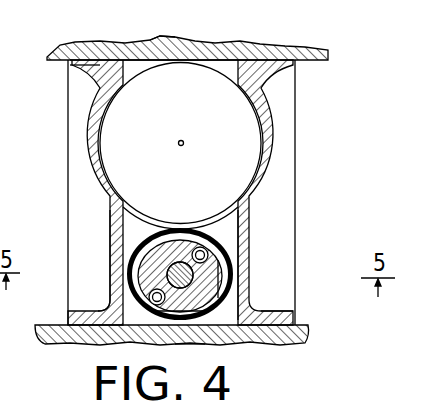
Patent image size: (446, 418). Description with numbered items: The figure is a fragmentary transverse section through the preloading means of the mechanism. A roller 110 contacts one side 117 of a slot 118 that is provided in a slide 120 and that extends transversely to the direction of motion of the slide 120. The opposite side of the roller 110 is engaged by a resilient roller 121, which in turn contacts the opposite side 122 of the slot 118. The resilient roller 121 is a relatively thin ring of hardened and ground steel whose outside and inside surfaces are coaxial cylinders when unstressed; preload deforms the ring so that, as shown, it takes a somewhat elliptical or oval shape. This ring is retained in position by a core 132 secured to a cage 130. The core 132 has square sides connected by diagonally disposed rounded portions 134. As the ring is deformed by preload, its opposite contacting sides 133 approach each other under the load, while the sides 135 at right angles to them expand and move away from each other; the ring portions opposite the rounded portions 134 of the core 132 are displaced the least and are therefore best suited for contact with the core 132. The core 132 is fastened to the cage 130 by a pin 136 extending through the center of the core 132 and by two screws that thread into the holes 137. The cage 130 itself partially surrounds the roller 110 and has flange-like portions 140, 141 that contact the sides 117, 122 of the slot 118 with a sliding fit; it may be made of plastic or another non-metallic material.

The roller 110 is at (228, 94).
The side of the slot 117 is at (183, 57).
The slot 118 is at (43, 323).
The slide 120 is at (328, 40).
The resilient roller 121 is at (230, 277).
The opposite side of the slot 122 is at (68, 305).
The cage 130 is at (108, 287).
The core 132 is at (248, 303).
The contacting sides of the resilient ring 133 is at (192, 347).
The rounded portions 134 is at (127, 238).
The sides of the resilient ring 135 is at (247, 282).
The pin 136 is at (167, 230).
The holes 137 is at (224, 240).
The flange-like portion 140 is at (88, 67).
The flange-like portion 141 is at (296, 323).